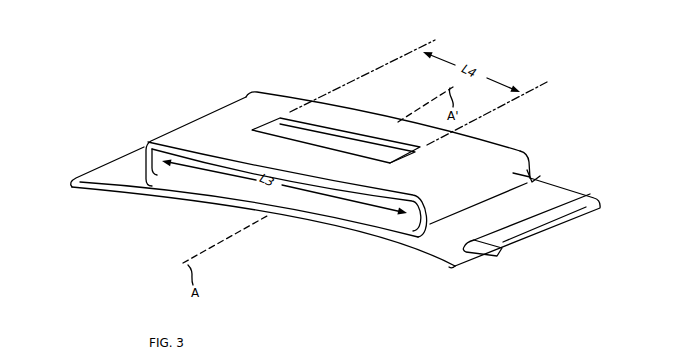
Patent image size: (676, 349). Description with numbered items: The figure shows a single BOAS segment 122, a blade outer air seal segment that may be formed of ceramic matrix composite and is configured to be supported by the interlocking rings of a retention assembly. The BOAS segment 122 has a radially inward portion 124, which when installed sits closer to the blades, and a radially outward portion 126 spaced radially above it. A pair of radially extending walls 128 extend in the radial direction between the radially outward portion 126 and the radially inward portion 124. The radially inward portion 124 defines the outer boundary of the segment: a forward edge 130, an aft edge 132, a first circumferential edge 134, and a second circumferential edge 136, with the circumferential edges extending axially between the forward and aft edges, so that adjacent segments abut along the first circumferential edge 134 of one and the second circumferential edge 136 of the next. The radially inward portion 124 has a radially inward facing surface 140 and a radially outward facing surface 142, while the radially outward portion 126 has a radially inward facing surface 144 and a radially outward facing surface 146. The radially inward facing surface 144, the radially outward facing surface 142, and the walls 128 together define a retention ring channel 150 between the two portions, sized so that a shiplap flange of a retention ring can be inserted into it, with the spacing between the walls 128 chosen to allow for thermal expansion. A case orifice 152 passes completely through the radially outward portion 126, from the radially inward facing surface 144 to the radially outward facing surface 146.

The BOAS segment 122 is at (339, 185).
The radially inward portion 124 is at (220, 188).
The radially outward portion 126 is at (287, 103).
The radially extending walls 128 is at (143, 153).
The forward edge 130 is at (375, 255).
The aft edge 132 is at (582, 178).
The first circumferential edge 134 is at (478, 265).
The second circumferential edge 136 is at (84, 160).
The radially inward facing surface 140 is at (307, 222).
The radially outward facing surface 142 is at (319, 208).
The radially inward facing surface 144 is at (340, 188).
The radially outward facing surface 146 is at (229, 138).
The retention ring channel 150 is at (201, 176).
The case orifice 152 is at (364, 132).